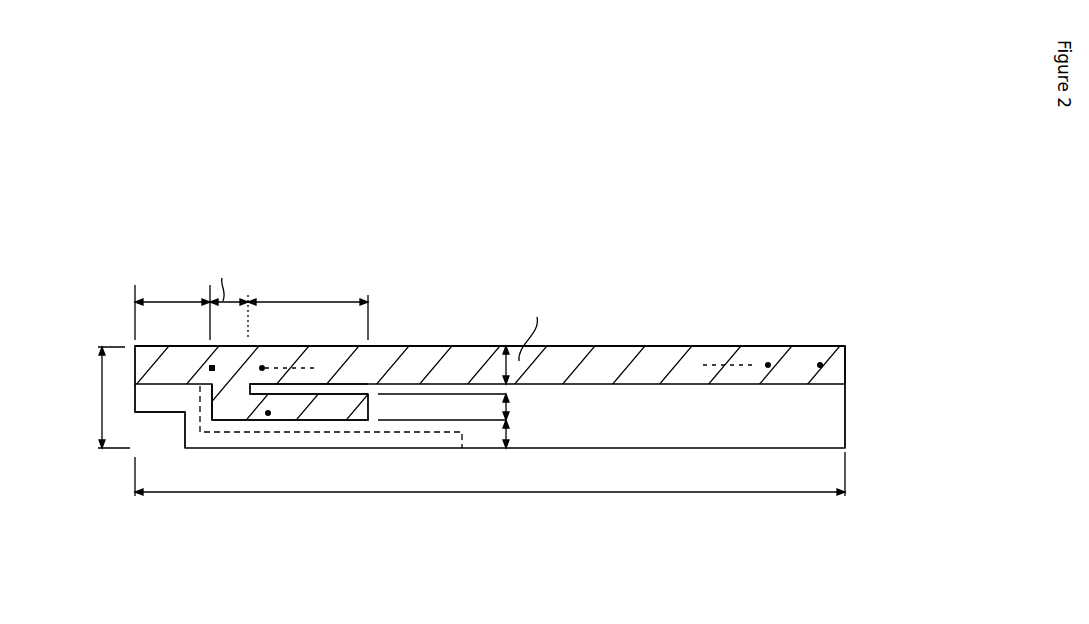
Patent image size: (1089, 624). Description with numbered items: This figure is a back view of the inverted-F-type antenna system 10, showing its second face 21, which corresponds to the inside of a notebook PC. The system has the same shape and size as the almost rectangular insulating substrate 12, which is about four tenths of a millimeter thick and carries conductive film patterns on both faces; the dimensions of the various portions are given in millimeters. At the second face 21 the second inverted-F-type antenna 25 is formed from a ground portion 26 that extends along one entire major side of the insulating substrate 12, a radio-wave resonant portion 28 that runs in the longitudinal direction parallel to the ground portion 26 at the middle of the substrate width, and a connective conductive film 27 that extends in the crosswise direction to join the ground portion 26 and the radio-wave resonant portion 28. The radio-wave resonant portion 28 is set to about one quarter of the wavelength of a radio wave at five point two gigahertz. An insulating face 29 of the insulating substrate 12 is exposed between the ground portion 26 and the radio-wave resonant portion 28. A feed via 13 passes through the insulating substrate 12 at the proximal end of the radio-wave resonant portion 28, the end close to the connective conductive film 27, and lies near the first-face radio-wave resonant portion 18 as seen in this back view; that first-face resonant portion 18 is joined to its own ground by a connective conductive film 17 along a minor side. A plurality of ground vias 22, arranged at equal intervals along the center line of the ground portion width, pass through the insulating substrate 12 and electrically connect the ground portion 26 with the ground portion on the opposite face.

The inverted-F-type antenna system 10 is at (527, 230).
The insulating substrate 12 is at (838, 423).
The feed via 13 is at (267, 416).
The connective conductive film 17 is at (194, 401).
The radio-wave resonant portion 18 is at (389, 433).
The second face 21 is at (851, 394).
The ground vias 22 is at (263, 364).
The second inverted-F-type antenna 25 is at (686, 344).
The ground portion 26 is at (623, 347).
The connective conductive film 27 is at (205, 404).
The radio-wave resonant portion 28 is at (348, 407).
The insulating face 29 is at (318, 390).